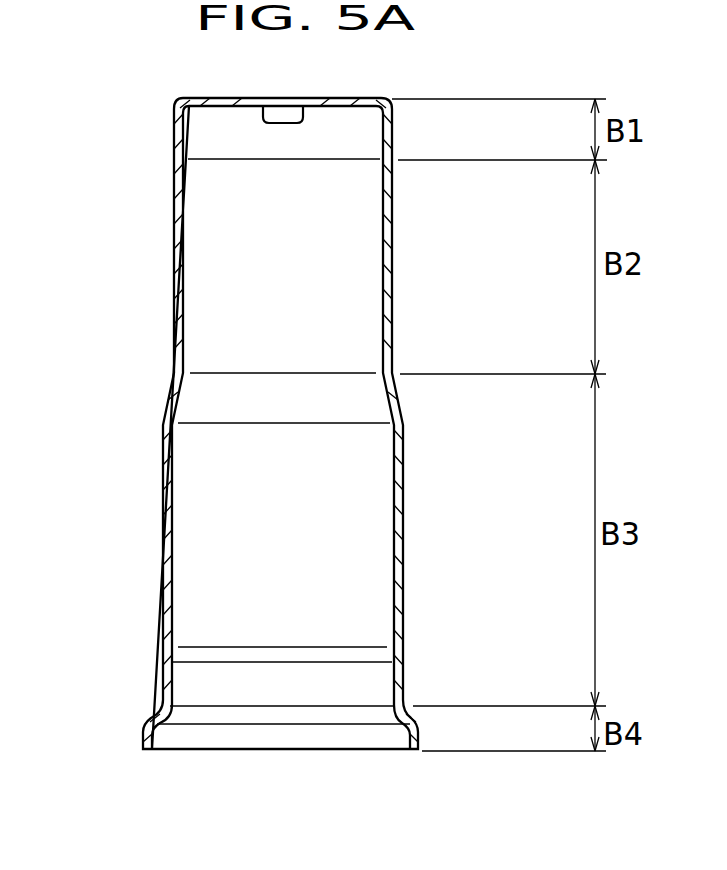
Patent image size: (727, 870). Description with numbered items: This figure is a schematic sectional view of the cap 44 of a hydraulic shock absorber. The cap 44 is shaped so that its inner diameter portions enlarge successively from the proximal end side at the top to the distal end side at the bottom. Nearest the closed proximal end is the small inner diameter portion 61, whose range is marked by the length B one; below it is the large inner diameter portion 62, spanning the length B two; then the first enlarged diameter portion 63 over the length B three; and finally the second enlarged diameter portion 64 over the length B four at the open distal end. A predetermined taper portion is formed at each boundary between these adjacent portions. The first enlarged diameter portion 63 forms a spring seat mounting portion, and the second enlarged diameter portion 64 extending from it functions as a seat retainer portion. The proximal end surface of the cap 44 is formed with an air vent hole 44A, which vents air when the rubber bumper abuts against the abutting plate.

The cap 44 is at (160, 470).
The air vent hole 44A is at (276, 124).
The small inner diameter portion 61 is at (392, 122).
The large inner diameter portion 62 is at (392, 218).
The first enlarged diameter portion 63 is at (404, 580).
The second enlarged diameter portion 64 is at (418, 740).